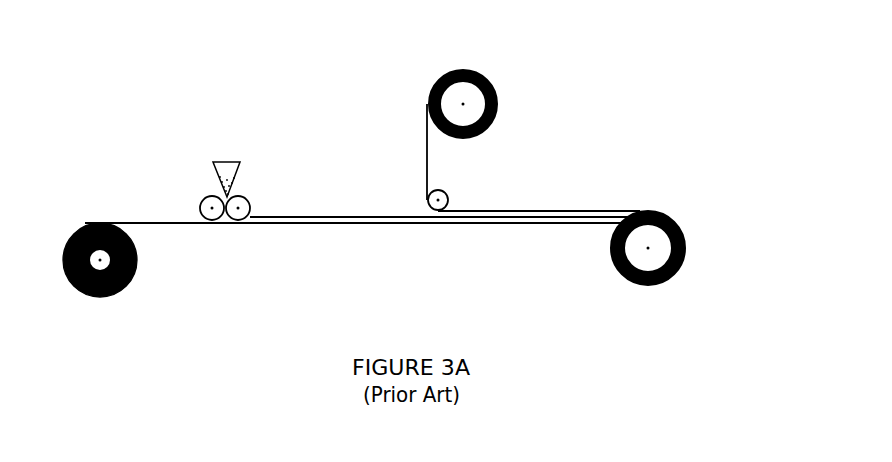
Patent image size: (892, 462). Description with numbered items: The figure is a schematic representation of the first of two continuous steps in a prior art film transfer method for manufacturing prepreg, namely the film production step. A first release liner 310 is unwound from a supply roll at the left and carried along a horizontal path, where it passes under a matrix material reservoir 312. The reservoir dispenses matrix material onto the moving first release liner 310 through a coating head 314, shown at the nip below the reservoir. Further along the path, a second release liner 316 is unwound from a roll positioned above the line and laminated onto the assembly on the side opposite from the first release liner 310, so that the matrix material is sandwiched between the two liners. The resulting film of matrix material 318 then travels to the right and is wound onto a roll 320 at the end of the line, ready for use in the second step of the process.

The first release liner 310 is at (155, 220).
The matrix material reservoir 312 is at (220, 182).
The coating head 314 is at (222, 242).
The second release liner 316 is at (427, 145).
The film of matrix material 318 is at (547, 211).
The roll 320 is at (652, 246).